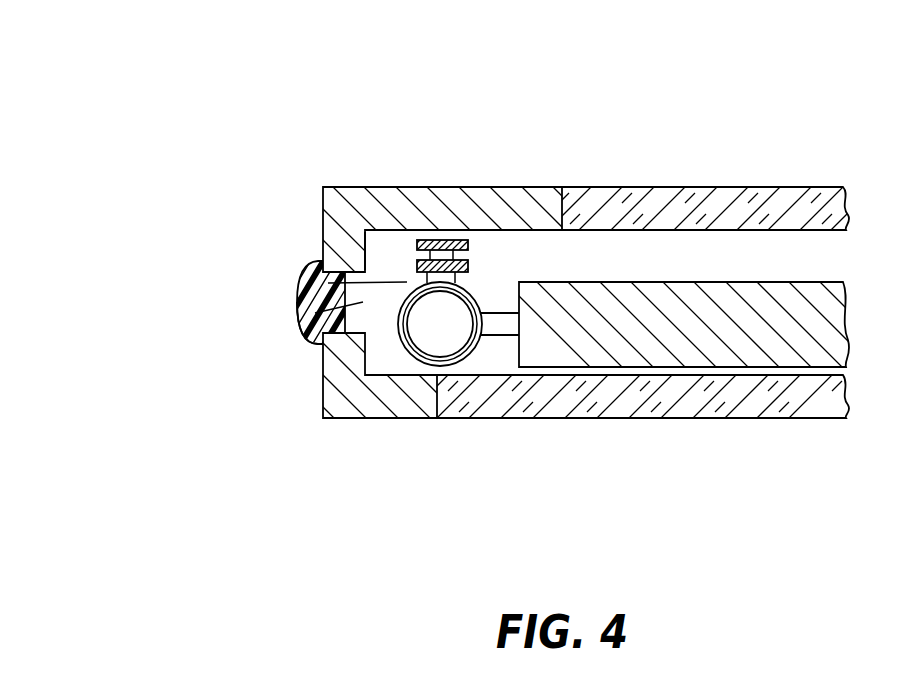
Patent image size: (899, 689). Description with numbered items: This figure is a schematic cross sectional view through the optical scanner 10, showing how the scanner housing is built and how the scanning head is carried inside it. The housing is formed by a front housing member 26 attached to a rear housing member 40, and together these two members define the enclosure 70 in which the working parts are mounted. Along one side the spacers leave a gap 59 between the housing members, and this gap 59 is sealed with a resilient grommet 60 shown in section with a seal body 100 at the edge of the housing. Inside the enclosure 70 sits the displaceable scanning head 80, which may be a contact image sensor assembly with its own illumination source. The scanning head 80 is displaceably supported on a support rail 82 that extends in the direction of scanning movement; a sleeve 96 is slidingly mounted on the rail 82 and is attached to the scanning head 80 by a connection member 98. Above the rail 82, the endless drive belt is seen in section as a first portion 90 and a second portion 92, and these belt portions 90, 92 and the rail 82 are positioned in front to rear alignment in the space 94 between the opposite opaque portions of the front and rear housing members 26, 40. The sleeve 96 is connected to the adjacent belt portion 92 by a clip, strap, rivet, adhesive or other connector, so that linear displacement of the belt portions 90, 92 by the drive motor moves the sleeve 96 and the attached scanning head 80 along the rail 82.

The assembly 10 is at (172, 85).
The front housing member 26 is at (355, 187).
The rear housing member 40 is at (407, 418).
The gap 59 is at (300, 341).
The resilient grommet 60 is at (300, 299).
The enclosure 70 is at (672, 258).
The displaceable scanning head 80 is at (482, 255).
The support rail 82 is at (428, 334).
The first portion of the belt 90 is at (458, 240).
The second portion of the belt 92 is at (398, 240).
The space 94 is at (387, 260).
The sleeve 96 is at (458, 365).
The connection member 98 is at (500, 337).
The seal body 100 is at (300, 264).